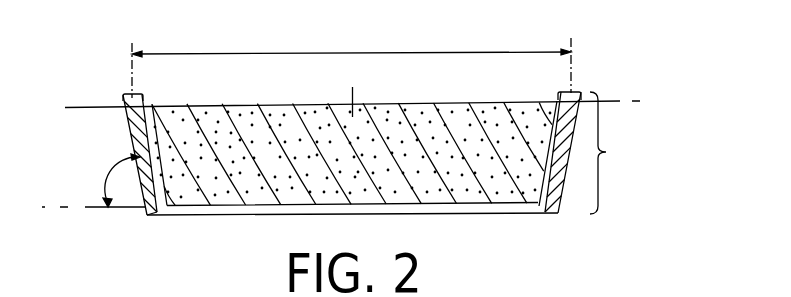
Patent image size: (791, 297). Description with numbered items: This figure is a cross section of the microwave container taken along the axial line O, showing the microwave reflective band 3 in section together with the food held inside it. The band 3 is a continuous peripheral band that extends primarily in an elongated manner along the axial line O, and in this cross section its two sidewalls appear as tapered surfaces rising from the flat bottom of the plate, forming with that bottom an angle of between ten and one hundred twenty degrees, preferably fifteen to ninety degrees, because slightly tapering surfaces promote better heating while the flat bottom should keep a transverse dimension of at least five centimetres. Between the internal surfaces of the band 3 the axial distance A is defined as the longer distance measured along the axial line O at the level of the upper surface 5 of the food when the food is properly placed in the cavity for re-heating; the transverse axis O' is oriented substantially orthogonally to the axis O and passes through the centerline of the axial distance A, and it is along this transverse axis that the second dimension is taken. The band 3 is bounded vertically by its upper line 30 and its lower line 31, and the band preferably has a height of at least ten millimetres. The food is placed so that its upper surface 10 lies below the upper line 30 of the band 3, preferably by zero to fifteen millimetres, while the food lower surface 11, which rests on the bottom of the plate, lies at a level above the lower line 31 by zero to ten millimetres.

The upper line of the band 30 is at (123, 94).
The lower line of the band 31 is at (147, 217).
The upper surface of the food 10 is at (240, 104).
The food lower surface 11 is at (231, 200).
The upper surface of the food 5 is at (480, 103).
The band 3 is at (605, 153).
The axial distance A is at (351, 42).
The axial line O is at (352, 132).
The transverse axis O' is at (373, 88).